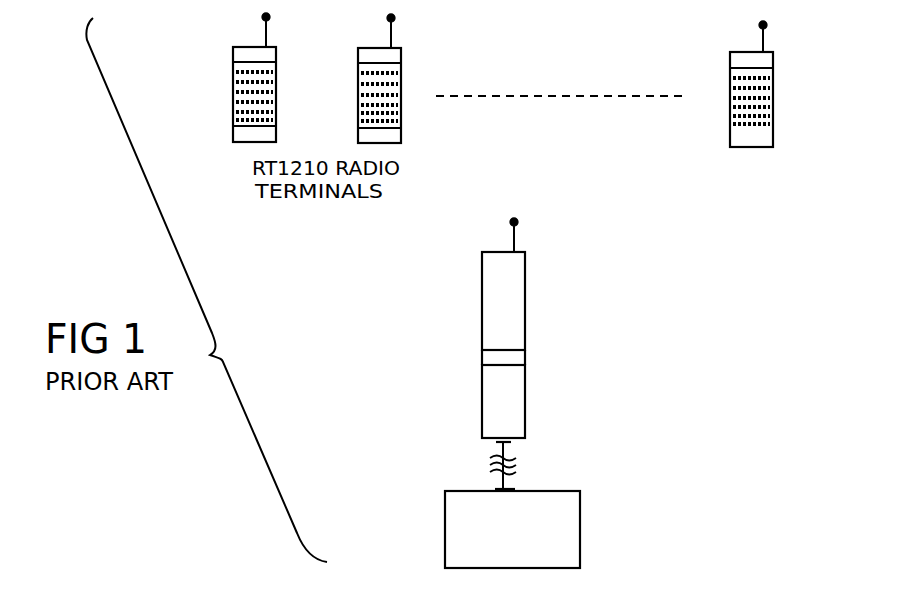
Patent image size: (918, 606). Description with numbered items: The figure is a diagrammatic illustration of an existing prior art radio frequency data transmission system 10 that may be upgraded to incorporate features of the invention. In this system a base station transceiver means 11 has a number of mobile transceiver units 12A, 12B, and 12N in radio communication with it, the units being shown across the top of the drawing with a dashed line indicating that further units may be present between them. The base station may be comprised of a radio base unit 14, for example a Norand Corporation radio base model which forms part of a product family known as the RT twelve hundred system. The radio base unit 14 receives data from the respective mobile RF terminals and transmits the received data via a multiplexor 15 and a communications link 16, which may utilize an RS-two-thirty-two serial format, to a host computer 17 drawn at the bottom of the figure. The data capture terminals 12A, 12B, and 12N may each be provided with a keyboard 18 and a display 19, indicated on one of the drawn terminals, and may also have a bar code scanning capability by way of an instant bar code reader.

The radio frequency data transmission system 10 is at (377, 366).
The base station transceiver means 11 is at (442, 403).
The mobile transceiver unit 12A is at (277, 88).
The mobile transceiver unit 12B is at (444, 80).
The mobile transceiver unit 12N is at (731, 80).
The radio base unit 14 is at (482, 292).
The multiplexor 15 is at (482, 388).
The communications link 16 is at (497, 474).
The host computer 17 is at (581, 530).
The keyboard 18 is at (402, 108).
The display 19 is at (402, 57).